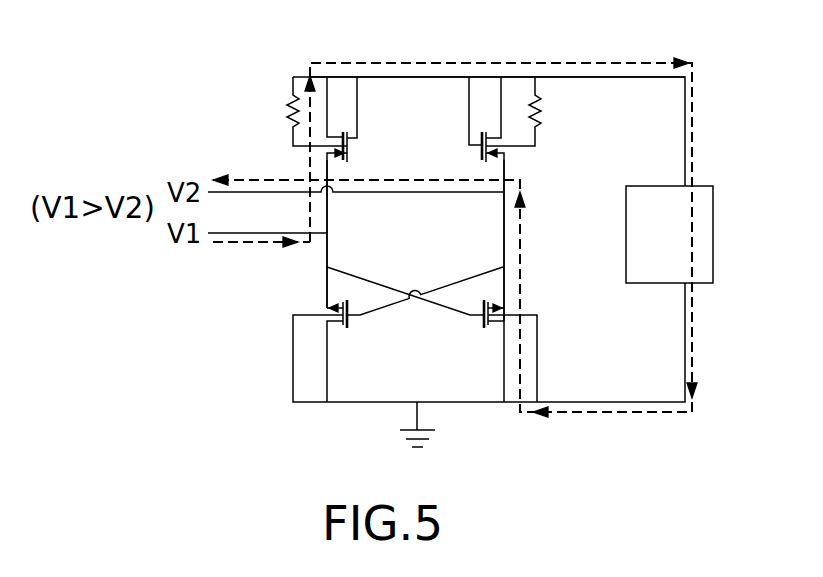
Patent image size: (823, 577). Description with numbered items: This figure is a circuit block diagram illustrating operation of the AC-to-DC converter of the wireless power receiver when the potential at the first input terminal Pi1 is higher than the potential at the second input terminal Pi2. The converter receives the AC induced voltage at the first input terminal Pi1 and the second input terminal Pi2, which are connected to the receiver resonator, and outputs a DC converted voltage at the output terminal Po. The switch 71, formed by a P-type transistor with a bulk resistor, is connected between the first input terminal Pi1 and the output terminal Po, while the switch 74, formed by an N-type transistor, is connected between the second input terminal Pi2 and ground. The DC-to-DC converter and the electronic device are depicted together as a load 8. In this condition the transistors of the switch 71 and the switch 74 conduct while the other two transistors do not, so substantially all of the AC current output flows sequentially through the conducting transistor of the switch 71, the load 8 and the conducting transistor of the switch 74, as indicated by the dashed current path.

The switch 71 is at (372, 100).
The load 8 is at (702, 185).
The switch 74 is at (471, 378).
The output terminal Po is at (432, 76).
The first input terminal Pi1 is at (328, 233).
The second input terminal Pi2 is at (502, 237).